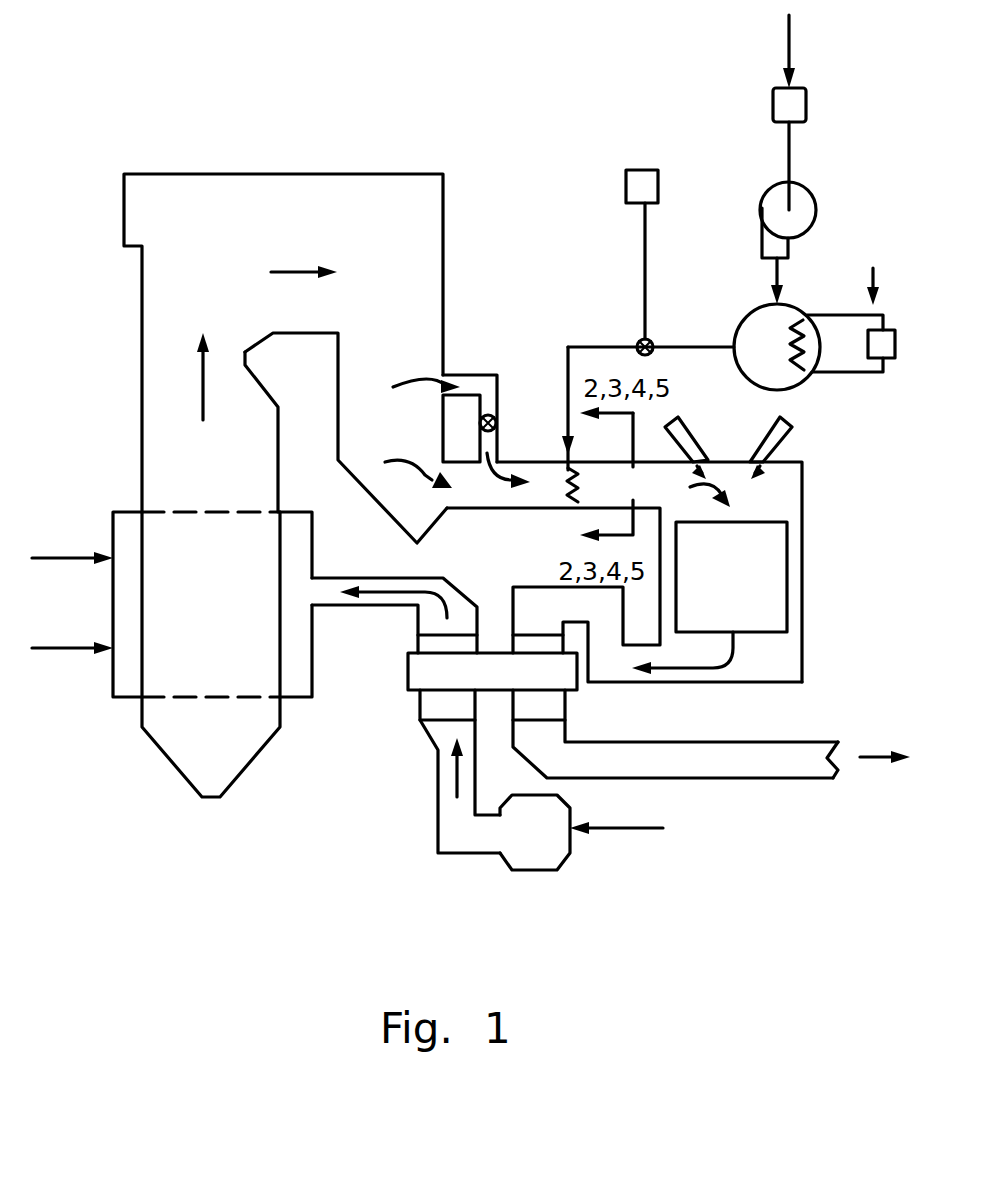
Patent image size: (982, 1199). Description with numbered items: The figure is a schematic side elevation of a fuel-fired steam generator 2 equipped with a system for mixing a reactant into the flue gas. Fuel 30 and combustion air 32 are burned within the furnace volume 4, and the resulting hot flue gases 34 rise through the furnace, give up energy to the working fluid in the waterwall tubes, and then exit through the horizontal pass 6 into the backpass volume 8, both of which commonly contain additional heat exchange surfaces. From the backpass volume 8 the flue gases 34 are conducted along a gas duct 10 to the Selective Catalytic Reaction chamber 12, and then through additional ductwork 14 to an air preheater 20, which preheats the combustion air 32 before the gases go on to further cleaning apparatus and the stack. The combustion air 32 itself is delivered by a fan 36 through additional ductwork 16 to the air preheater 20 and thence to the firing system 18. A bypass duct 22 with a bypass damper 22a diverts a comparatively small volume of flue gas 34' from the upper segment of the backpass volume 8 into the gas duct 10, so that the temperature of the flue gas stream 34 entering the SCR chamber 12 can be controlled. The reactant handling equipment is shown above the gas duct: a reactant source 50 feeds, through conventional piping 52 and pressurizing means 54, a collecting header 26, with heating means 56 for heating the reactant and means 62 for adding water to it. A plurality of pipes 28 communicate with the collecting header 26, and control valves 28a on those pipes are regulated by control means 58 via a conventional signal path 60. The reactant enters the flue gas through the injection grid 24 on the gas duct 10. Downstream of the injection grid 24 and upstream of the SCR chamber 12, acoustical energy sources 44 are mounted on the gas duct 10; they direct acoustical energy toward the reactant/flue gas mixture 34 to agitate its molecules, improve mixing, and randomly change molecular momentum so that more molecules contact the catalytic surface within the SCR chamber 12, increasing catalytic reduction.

The fuel-fired steam generator 2 is at (303, 915).
The furnace volume 4 is at (201, 491).
The horizontal pass 6 is at (285, 228).
The backpass volume 8 is at (376, 328).
The gas duct 10 is at (505, 508).
The Selective Catalytic Reaction chamber 12 is at (717, 594).
The additional ductwork 14 is at (513, 587).
The additional ductwork 16 is at (366, 578).
The firing system 18 is at (313, 662).
The air preheater 20 is at (408, 686).
The bypass duct 22 is at (472, 375).
The bypass damper 22a is at (500, 424).
The injection grid 24 is at (568, 470).
The collecting header 26 is at (795, 385).
The pipes 28 is at (568, 340).
The control valves 28a is at (640, 342).
The fuel 30 is at (80, 555).
The combustion air 32 is at (80, 645).
The flue gases 34 is at (553, 514).
The flue gas 34' is at (405, 387).
The fan 36 is at (516, 843).
The acoustical energy sources 44 is at (772, 437).
The reactant source 50 is at (778, 85).
The conventional piping 52 is at (789, 152).
The pressurizing means 54 is at (762, 210).
The heating means 56 is at (873, 275).
The control means 58 is at (640, 170).
The signal path 60 is at (646, 255).
The water adding means 62 is at (789, 32).